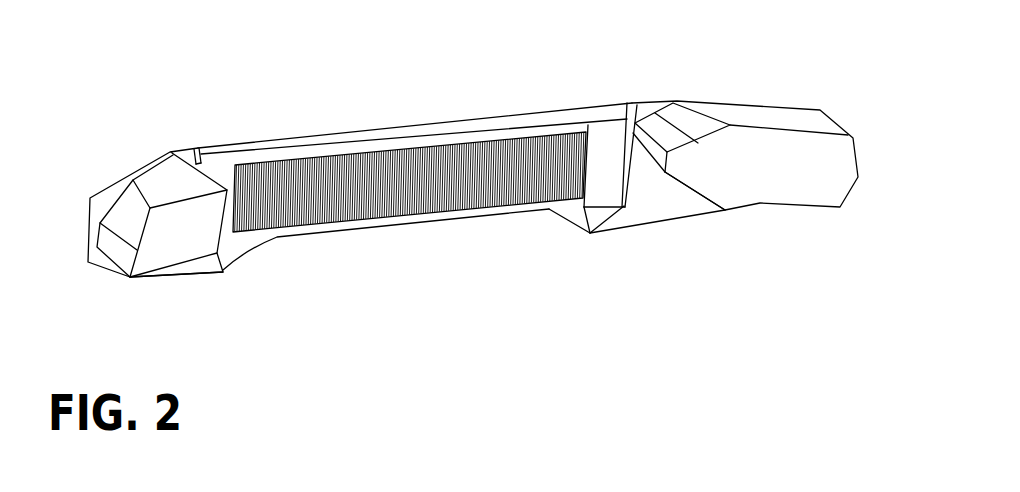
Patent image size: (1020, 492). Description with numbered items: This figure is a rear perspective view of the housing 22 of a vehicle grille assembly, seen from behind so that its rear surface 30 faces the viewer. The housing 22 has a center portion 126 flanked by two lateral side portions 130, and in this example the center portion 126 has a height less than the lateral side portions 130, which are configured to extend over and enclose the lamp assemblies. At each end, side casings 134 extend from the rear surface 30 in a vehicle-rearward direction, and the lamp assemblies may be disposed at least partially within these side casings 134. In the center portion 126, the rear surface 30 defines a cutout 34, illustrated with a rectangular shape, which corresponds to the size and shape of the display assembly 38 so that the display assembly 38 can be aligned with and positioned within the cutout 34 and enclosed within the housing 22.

The housing 22 is at (643, 113).
The rear surface 30 is at (640, 210).
The cutout 34 is at (558, 135).
The display assembly 38 is at (440, 181).
The center portion 126 is at (373, 225).
The lateral side portions 130 is at (223, 270).
The side casings 134 is at (163, 183).